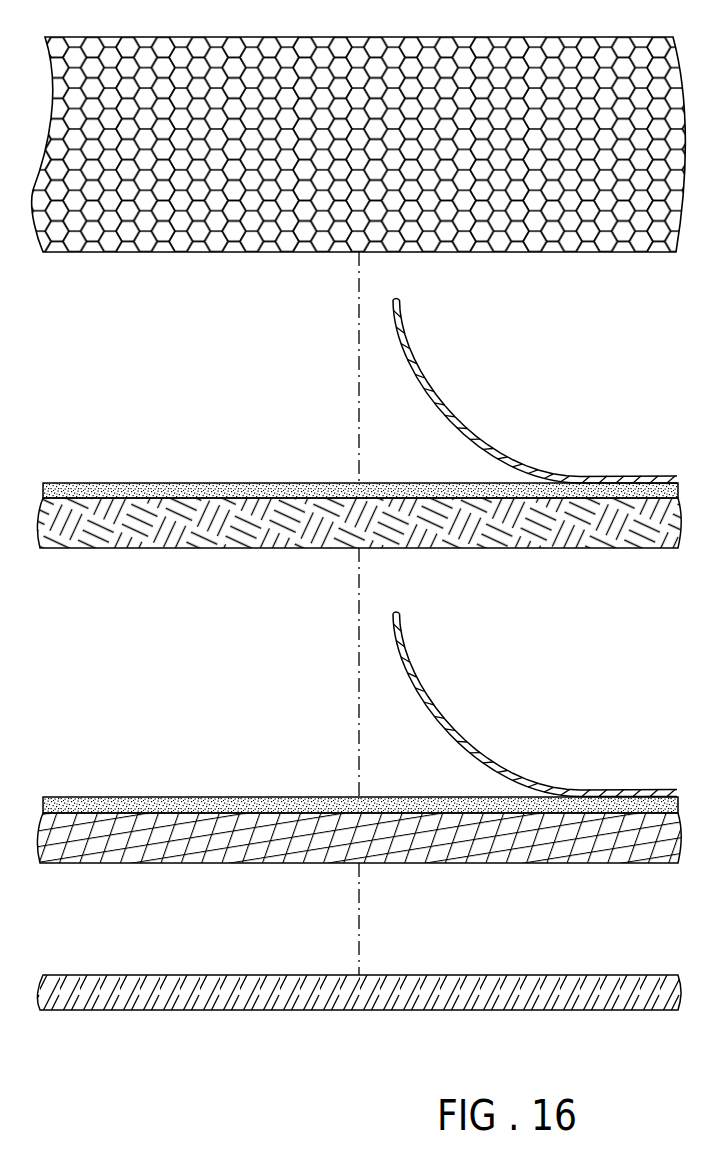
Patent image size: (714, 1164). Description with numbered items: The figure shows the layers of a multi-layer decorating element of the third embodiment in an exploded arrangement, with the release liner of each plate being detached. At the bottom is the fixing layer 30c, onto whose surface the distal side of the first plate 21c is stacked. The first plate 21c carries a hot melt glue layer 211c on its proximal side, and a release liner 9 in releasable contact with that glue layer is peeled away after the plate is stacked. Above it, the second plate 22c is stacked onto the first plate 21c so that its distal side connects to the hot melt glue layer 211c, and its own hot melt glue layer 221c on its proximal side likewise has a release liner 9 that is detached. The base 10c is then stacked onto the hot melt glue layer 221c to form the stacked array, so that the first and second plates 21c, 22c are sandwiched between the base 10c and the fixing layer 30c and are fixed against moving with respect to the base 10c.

The base 10c is at (178, 222).
The hot melt glue layer 221c is at (257, 483).
The second plate 22c is at (182, 547).
The release liner 9 is at (432, 385).
The hot melt glue layer 211c is at (263, 797).
The first plate 21c is at (183, 837).
The fixing layer 30c is at (270, 993).